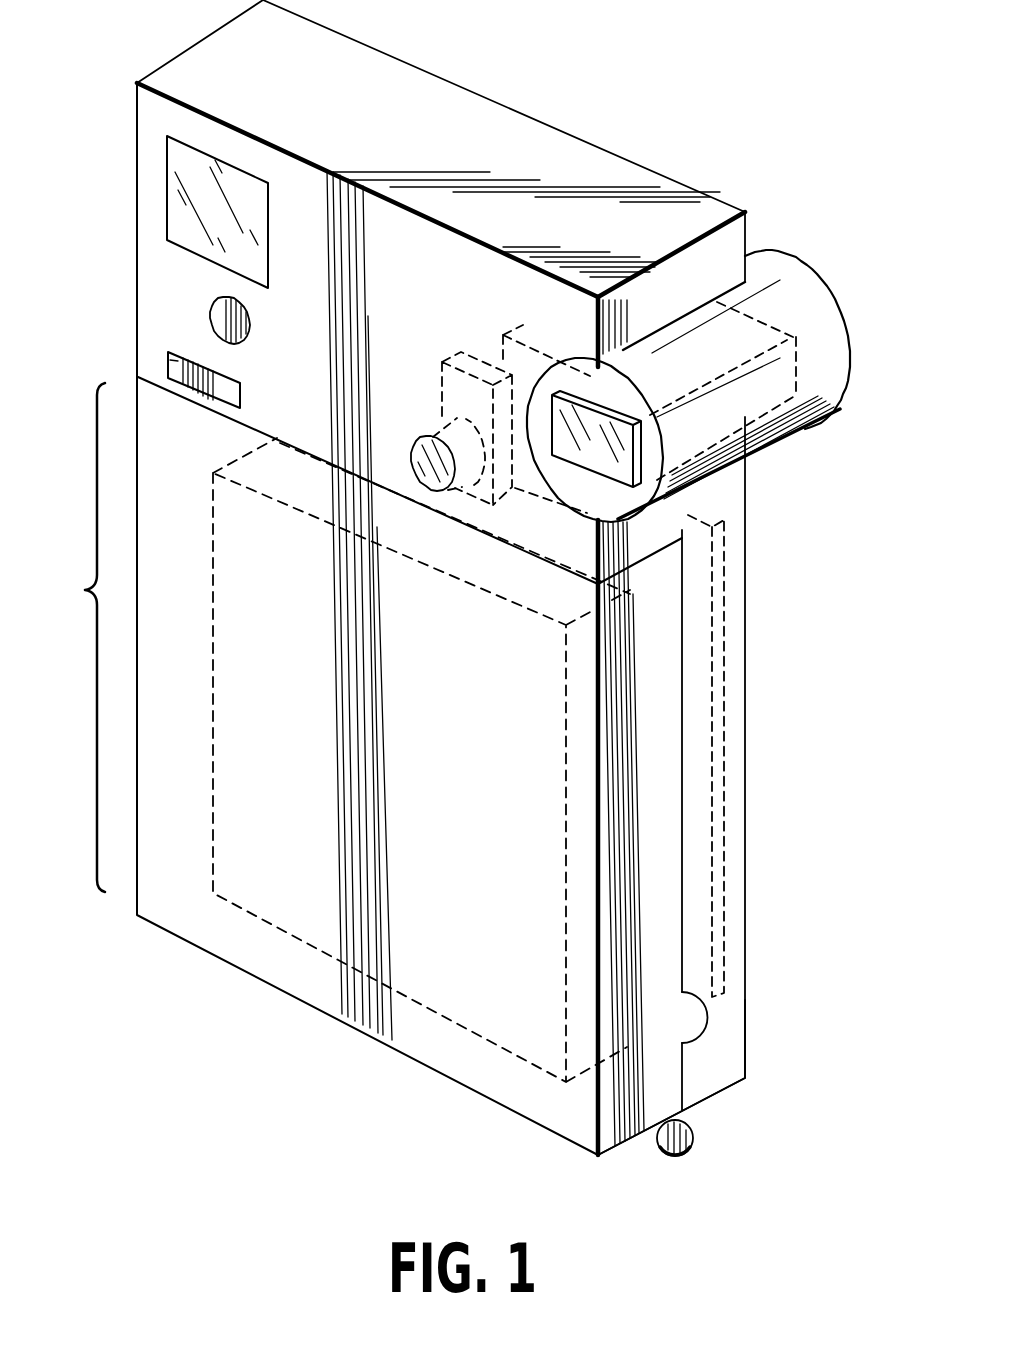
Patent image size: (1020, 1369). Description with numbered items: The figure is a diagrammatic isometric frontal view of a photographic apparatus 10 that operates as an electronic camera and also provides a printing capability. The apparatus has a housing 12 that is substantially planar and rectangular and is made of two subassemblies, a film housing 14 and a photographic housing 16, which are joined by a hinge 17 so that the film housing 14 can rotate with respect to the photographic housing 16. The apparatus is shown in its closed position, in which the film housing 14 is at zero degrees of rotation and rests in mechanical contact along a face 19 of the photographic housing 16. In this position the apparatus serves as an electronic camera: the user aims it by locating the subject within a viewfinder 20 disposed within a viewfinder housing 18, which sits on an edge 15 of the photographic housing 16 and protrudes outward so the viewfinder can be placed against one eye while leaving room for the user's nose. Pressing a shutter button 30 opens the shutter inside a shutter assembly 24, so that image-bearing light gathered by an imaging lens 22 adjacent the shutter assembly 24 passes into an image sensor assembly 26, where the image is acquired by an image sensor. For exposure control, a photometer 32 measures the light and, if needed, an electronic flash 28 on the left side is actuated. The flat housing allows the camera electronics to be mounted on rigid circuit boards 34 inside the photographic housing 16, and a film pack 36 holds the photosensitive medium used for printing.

The photographic apparatus 10 is at (363, 634).
The housing 12 is at (540, 100).
The film housing 14 is at (637, 1100).
The edge 15 is at (722, 492).
The photographic housing 16 is at (715, 1060).
The hinge 17 is at (683, 1140).
The viewfinder housing 18 is at (815, 388).
The face 19 is at (681, 676).
The viewfinder 20 is at (770, 332).
The imaging lens 22 is at (415, 460).
The shutter assembly 24 is at (448, 397).
The image sensor assembly 26 is at (533, 338).
The electronic flash 28 is at (178, 212).
The shutter button 30 is at (222, 316).
The photometer 32 is at (172, 368).
The rigid circuit boards 34 is at (725, 713).
The film pack 36 is at (475, 947).